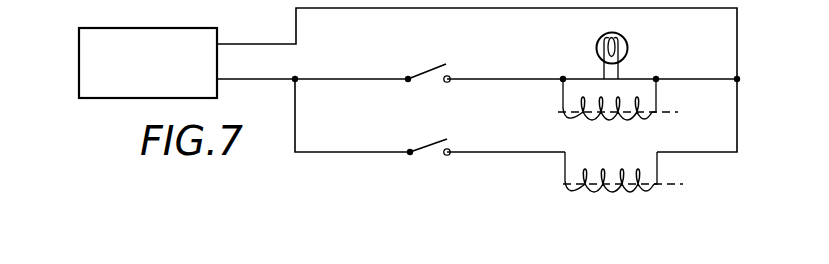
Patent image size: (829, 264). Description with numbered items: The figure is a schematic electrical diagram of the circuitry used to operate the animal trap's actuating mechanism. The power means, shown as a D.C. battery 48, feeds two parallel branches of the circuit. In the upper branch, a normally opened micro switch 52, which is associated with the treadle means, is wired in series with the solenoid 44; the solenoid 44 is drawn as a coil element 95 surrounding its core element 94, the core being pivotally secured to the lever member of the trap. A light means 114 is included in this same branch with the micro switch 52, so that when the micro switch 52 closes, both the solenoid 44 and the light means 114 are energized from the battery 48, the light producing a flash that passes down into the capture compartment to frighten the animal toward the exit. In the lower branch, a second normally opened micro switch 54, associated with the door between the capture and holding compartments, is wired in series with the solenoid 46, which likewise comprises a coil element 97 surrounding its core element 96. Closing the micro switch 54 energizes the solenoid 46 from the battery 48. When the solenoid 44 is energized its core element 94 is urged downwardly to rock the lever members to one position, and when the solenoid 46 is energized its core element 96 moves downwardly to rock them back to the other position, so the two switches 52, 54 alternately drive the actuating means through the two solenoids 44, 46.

The D.C. battery 48 is at (78, 69).
The micro switch 52 is at (418, 62).
The micro switch 54 is at (431, 136).
The light means 114 is at (628, 48).
The solenoid 44 is at (563, 124).
The core element 94 is at (658, 108).
The coil element 95 is at (643, 120).
The solenoid 46 is at (591, 206).
The core element 96 is at (660, 185).
The coil element 97 is at (645, 197).